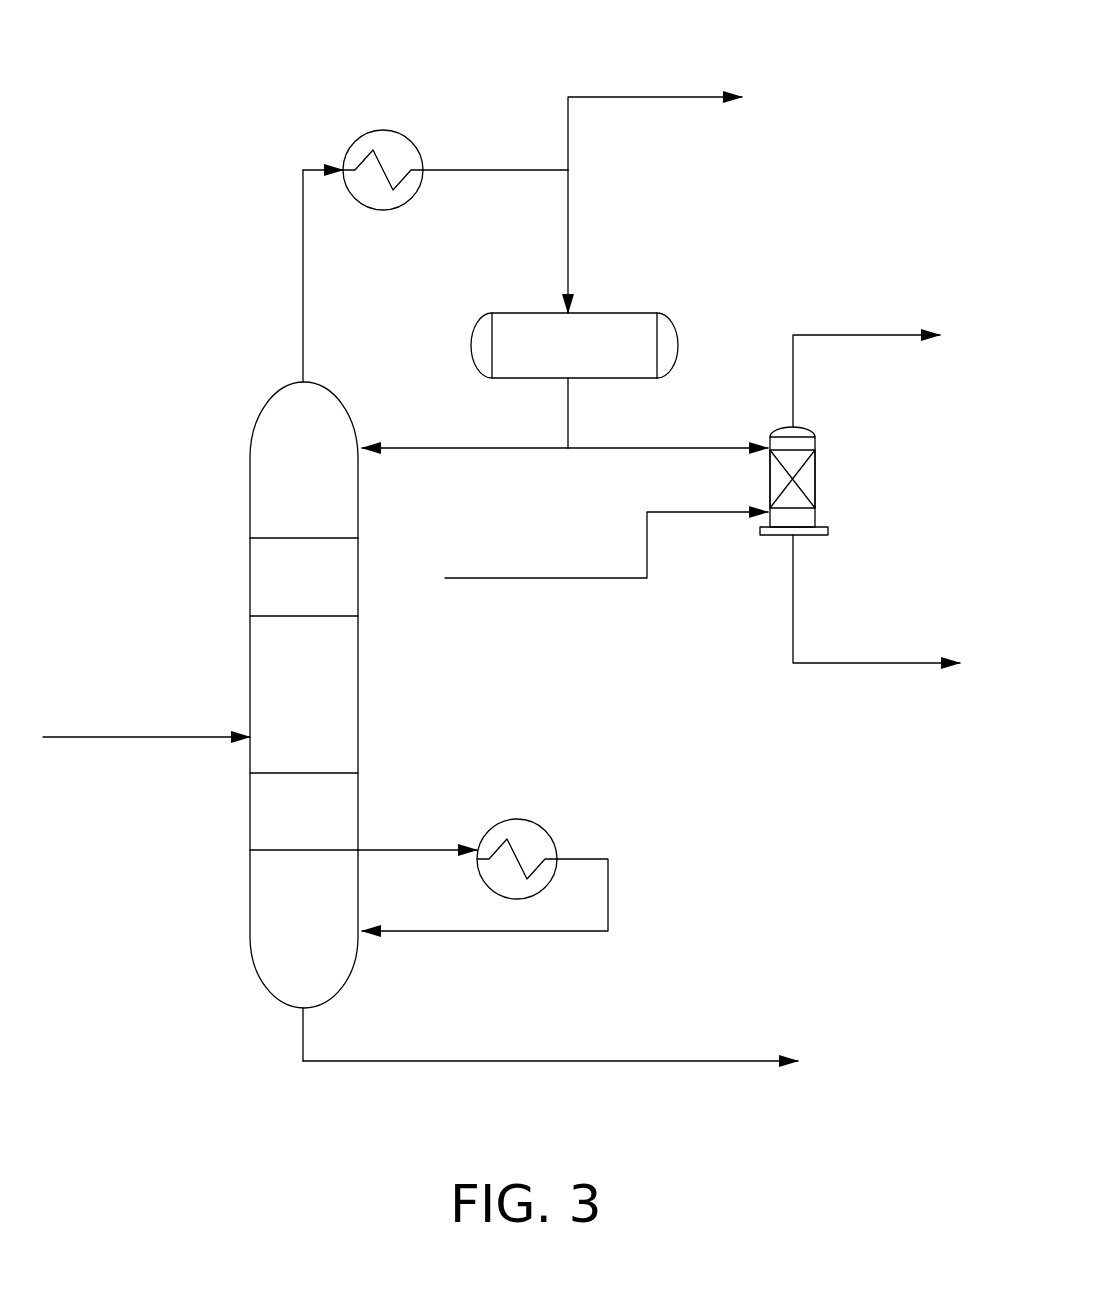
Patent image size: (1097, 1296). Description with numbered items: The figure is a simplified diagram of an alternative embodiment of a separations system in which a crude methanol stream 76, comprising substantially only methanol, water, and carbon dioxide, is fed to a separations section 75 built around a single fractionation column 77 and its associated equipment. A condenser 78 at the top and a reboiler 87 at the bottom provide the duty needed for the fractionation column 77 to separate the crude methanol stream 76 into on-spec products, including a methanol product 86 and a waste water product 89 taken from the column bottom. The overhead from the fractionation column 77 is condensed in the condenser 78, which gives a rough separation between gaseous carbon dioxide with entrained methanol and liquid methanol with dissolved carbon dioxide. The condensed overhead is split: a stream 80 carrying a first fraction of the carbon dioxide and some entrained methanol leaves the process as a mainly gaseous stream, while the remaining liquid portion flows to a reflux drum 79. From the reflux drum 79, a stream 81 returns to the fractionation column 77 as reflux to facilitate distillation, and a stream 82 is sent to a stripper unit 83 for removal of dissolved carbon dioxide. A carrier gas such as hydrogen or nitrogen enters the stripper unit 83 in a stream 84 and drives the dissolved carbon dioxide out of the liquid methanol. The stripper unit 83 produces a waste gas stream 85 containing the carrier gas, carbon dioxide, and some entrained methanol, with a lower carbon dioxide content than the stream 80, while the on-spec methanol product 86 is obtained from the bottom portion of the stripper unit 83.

The separations section 75 is at (230, 1012).
The crude methanol stream 76 is at (100, 735).
The fractionation column 77 is at (250, 571).
The condenser 78 is at (352, 145).
The reflux drum 79 is at (632, 313).
The stream 80 is at (670, 97).
The stream 81 is at (437, 448).
The stream 82 is at (650, 448).
The stripper unit 83 is at (816, 478).
The stream 84 is at (540, 578).
The waste gas stream 85 is at (855, 335).
The methanol product 86 is at (842, 663).
The reboiler 87 is at (513, 819).
The waste water product 89 is at (550, 1061).